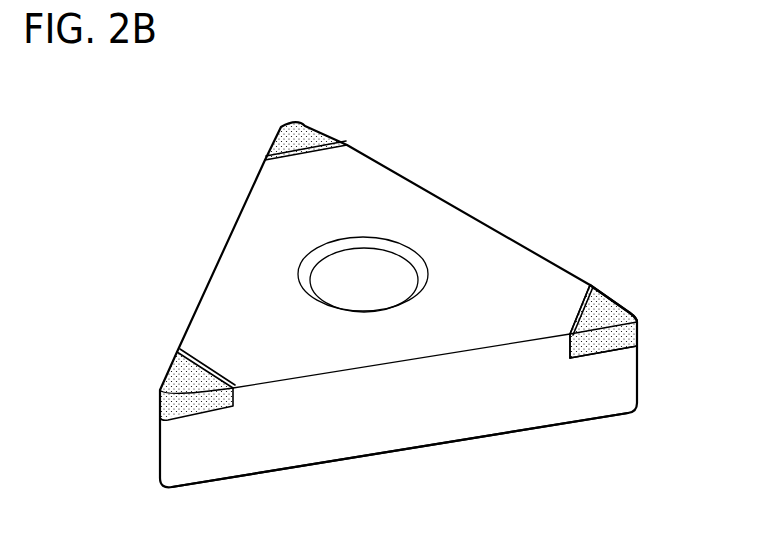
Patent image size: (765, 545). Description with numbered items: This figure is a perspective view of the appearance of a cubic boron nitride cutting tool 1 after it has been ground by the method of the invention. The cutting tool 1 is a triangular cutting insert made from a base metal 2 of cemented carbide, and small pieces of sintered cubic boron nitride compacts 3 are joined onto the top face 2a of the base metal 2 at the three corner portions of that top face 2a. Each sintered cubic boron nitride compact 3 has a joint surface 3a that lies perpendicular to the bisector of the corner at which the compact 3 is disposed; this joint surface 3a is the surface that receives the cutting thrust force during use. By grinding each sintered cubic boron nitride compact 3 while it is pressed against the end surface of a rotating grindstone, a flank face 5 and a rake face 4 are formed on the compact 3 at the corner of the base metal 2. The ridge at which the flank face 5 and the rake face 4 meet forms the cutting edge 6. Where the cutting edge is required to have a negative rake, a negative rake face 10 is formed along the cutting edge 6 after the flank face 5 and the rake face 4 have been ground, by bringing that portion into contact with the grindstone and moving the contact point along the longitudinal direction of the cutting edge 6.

The cubic boron nitride cutting tool 1 is at (466, 214).
The base metal 2 is at (450, 407).
The top face 2a is at (240, 258).
The sintered cubic boron nitride compact 3 is at (160, 407).
The joint surface 3a is at (570, 342).
The rake face 4 is at (608, 296).
The flank face 5 is at (612, 346).
The cutting edge 6 is at (641, 316).
The negative rake face 10 is at (592, 338).